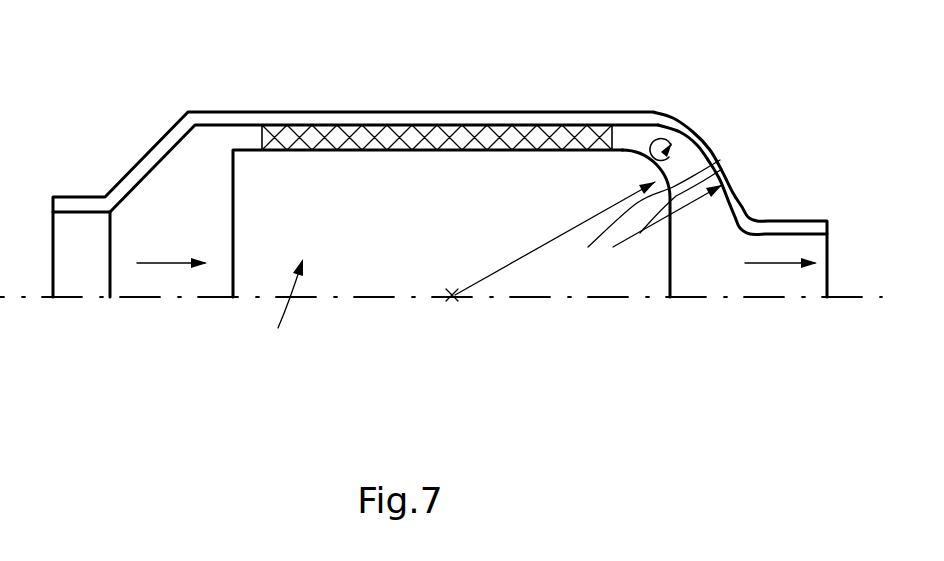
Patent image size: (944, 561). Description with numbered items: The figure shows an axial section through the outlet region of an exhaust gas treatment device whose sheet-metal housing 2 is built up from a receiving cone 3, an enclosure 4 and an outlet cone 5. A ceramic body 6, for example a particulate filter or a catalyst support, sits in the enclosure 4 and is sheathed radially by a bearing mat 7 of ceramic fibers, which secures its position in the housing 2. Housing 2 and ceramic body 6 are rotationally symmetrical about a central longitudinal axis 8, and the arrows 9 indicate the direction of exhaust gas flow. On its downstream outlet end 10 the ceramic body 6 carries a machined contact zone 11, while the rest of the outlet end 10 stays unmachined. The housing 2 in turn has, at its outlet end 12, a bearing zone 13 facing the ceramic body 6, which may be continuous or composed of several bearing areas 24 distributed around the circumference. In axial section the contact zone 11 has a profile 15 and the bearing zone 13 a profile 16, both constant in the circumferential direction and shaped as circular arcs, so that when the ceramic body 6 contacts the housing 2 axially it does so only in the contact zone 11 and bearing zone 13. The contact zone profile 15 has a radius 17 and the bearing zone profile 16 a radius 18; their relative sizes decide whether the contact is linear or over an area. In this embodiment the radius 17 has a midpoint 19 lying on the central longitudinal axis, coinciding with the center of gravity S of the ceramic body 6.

The housing 2 is at (306, 100).
The receiving cone 3 is at (138, 158).
The enclosure 4 is at (377, 113).
The outlet cone 5 is at (788, 222).
The ceramic body 6 is at (277, 310).
The bearing mat 7 is at (283, 140).
The central longitudinal axis 8 is at (608, 298).
The arrows 9 is at (163, 265).
The outlet end 10 is at (670, 274).
The contact zone 11 is at (644, 152).
The outlet end 12 is at (736, 208).
The bearing zone 13 is at (686, 145).
The contact zone profile 15 is at (710, 173).
The bearing zone profile 16 is at (638, 218).
The radius 17 is at (543, 243).
The radius 18 is at (672, 194).
The midpoint 19 is at (452, 298).
The bearing areas 24 is at (733, 197).
The center of gravity S is at (452, 293).